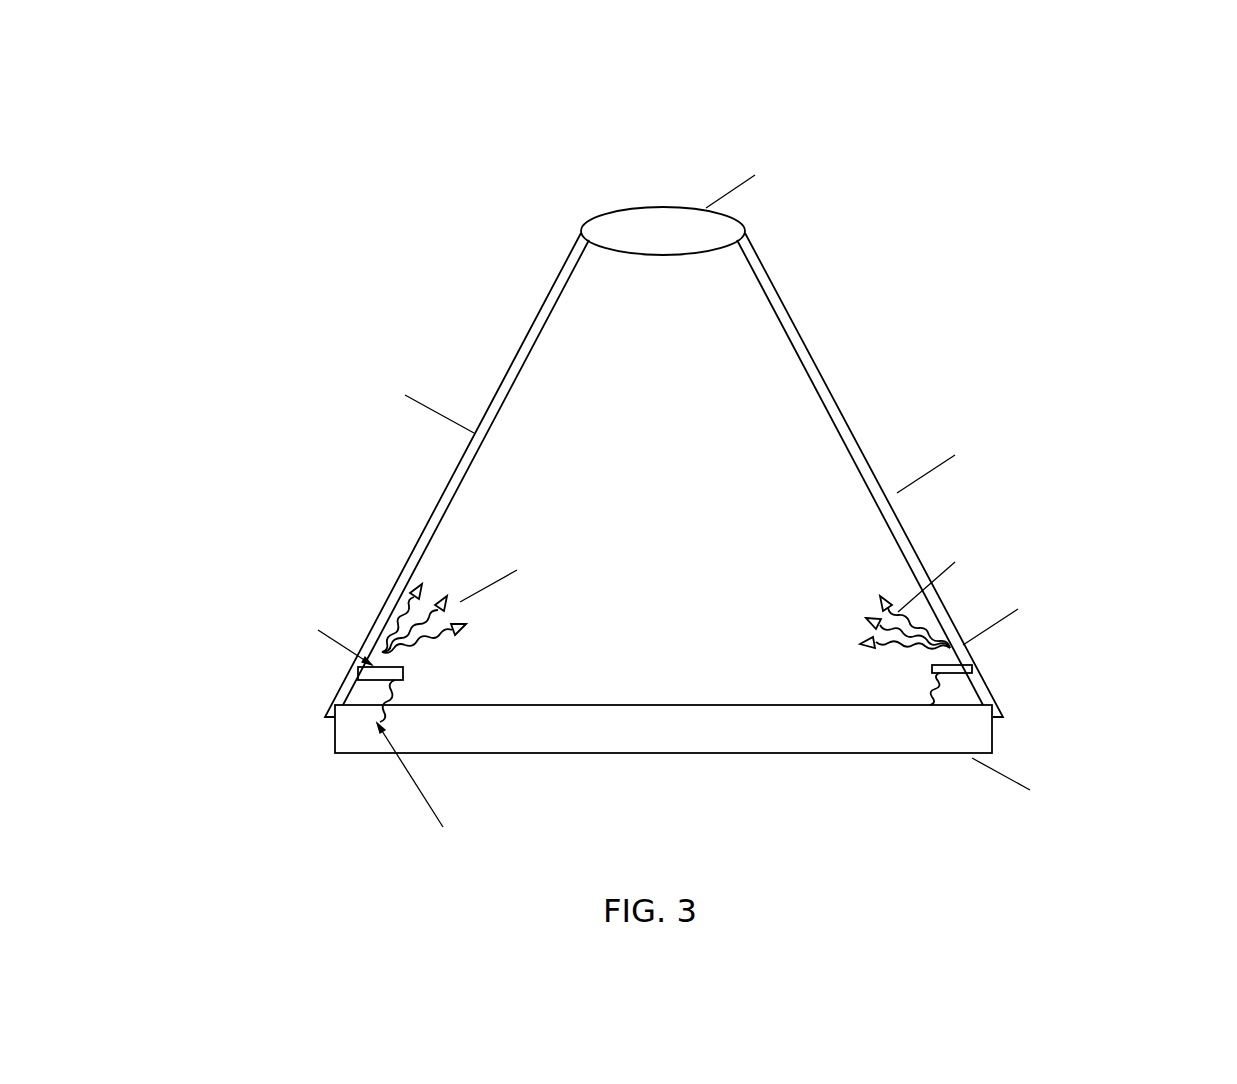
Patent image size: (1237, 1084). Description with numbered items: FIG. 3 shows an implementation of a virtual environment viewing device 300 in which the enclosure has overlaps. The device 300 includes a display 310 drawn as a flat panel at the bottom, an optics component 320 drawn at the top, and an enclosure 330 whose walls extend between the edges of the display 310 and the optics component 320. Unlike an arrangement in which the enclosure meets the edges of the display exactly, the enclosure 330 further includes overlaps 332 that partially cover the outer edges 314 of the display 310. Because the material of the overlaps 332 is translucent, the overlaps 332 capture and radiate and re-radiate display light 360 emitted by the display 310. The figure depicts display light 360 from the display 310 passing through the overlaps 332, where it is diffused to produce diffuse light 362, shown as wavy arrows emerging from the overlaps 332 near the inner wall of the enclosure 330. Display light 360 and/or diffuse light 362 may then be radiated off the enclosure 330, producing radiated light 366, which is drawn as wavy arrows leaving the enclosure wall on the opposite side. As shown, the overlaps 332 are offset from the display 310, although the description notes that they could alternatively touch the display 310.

The virtual environment viewing device 300 is at (1055, 163).
The display 310 is at (870, 755).
The outer edges 314 is at (958, 694).
The optics component 320 is at (664, 196).
The enclosure 330 is at (855, 438).
The overlaps 332 is at (365, 662).
The display light 360 is at (376, 723).
The diffuse light 362 is at (453, 645).
The radiated light 366 is at (888, 592).